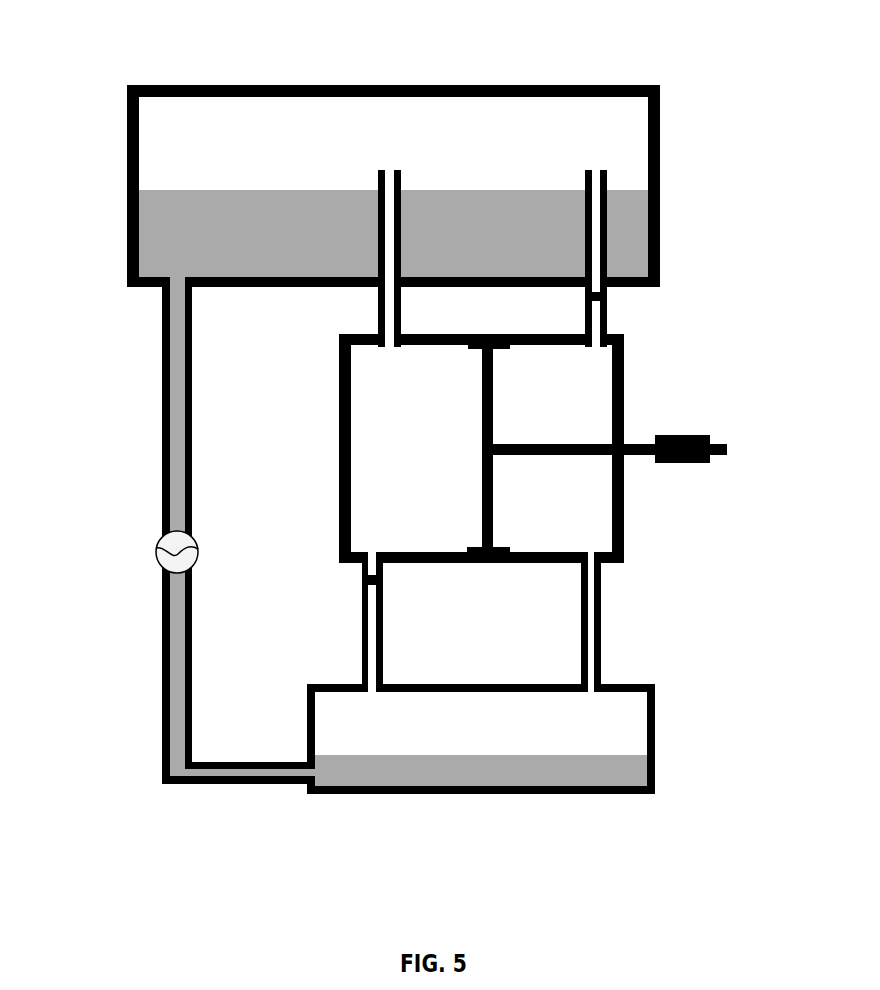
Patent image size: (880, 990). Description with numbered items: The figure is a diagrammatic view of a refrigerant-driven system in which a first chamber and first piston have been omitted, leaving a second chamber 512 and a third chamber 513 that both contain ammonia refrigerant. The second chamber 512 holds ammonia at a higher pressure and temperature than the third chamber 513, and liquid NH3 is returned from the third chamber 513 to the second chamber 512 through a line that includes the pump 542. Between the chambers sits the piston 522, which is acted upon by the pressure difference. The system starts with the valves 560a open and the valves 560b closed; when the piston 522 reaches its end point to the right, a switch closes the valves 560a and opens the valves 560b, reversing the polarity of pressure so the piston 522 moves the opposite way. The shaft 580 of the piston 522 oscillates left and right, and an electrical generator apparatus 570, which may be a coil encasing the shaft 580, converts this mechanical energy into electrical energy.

The second chamber 512 is at (338, 74).
The third chamber 513 is at (543, 810).
The piston 522 is at (456, 386).
The pump 542 is at (129, 552).
The valves 560a is at (378, 294).
The valves 560b is at (585, 294).
The electrical generator apparatus 570 is at (666, 420).
The shaft 580 is at (578, 458).